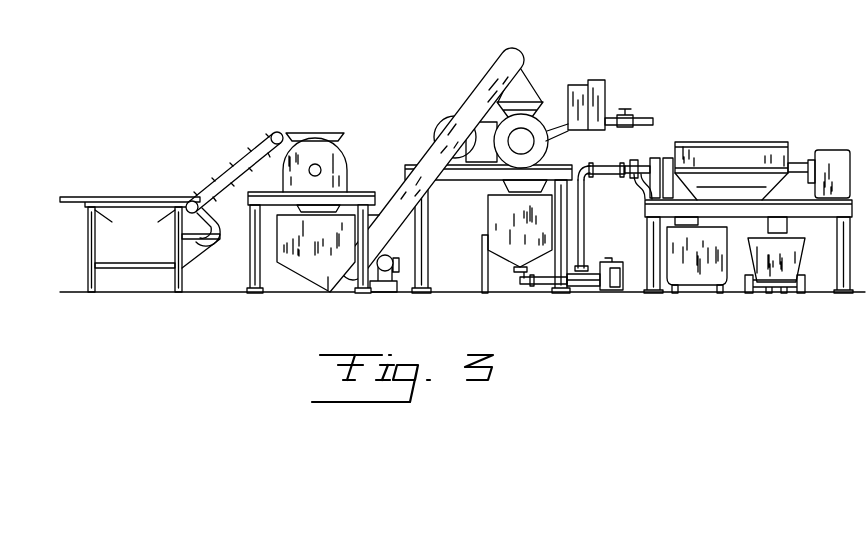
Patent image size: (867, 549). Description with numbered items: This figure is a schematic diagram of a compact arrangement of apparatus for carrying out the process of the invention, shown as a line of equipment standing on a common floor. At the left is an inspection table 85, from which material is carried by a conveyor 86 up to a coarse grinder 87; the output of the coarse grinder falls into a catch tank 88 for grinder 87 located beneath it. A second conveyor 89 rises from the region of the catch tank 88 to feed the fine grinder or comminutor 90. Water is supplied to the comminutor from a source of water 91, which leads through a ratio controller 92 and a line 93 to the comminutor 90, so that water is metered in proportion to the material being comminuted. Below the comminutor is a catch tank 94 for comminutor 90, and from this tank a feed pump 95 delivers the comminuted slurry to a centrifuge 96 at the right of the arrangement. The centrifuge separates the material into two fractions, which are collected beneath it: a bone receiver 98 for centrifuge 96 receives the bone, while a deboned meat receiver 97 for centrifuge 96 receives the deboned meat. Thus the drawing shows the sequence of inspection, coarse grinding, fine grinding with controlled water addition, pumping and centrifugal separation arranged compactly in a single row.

The inspection table 85 is at (133, 196).
The conveyor 86 is at (236, 163).
The coarse grinder 87 is at (342, 133).
The catch tank 88 is at (328, 292).
The conveyor 89 is at (424, 157).
The fine grinder or comminutor 90 is at (548, 143).
The source of water 91 is at (648, 117).
The ratio controller 92 is at (602, 102).
The line 93 is at (549, 129).
The catch tank 94 is at (500, 222).
The feed pump 95 is at (600, 290).
The centrifuge 96 is at (722, 150).
The deboned meat receiver 97 is at (767, 283).
The bone receiver 98 is at (708, 282).